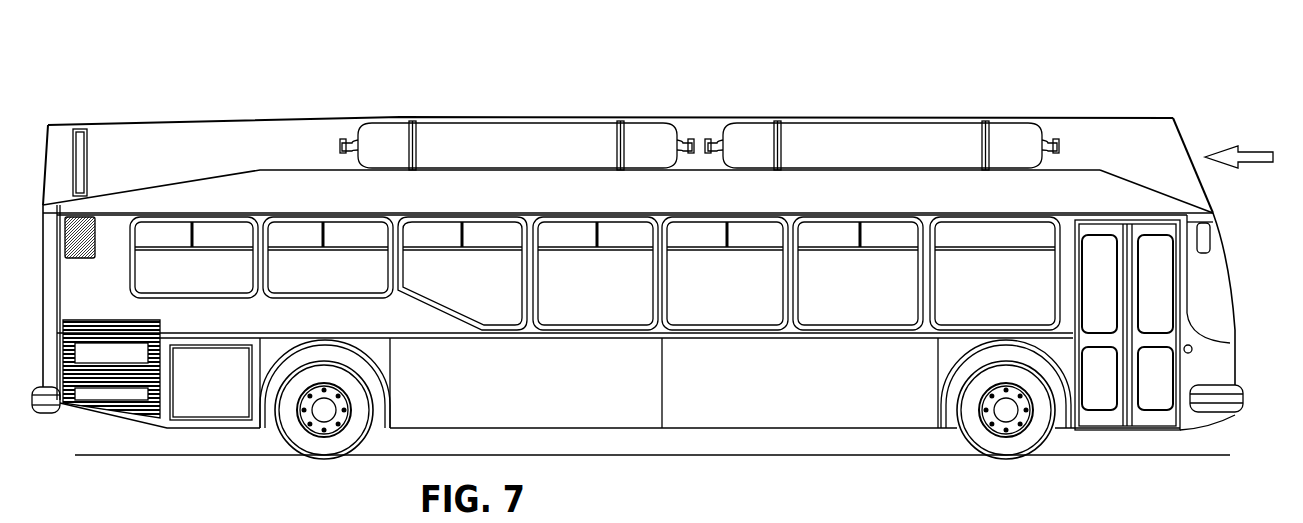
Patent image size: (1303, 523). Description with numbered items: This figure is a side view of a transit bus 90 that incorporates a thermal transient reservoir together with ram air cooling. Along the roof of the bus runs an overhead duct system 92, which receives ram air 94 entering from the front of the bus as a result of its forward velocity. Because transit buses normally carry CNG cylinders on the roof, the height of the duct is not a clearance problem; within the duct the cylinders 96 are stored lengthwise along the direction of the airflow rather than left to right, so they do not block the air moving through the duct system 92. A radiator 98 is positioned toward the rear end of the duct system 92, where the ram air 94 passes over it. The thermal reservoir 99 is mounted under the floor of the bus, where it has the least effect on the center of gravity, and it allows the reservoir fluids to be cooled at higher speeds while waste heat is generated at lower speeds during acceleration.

The transit bus 90 is at (310, 93).
The overhead duct system 92 is at (1147, 152).
The ram air 94 is at (1232, 145).
The fuel storage tanks 96 is at (450, 142).
The radiator 98 is at (90, 150).
The thermal reservoir 99 is at (208, 395).